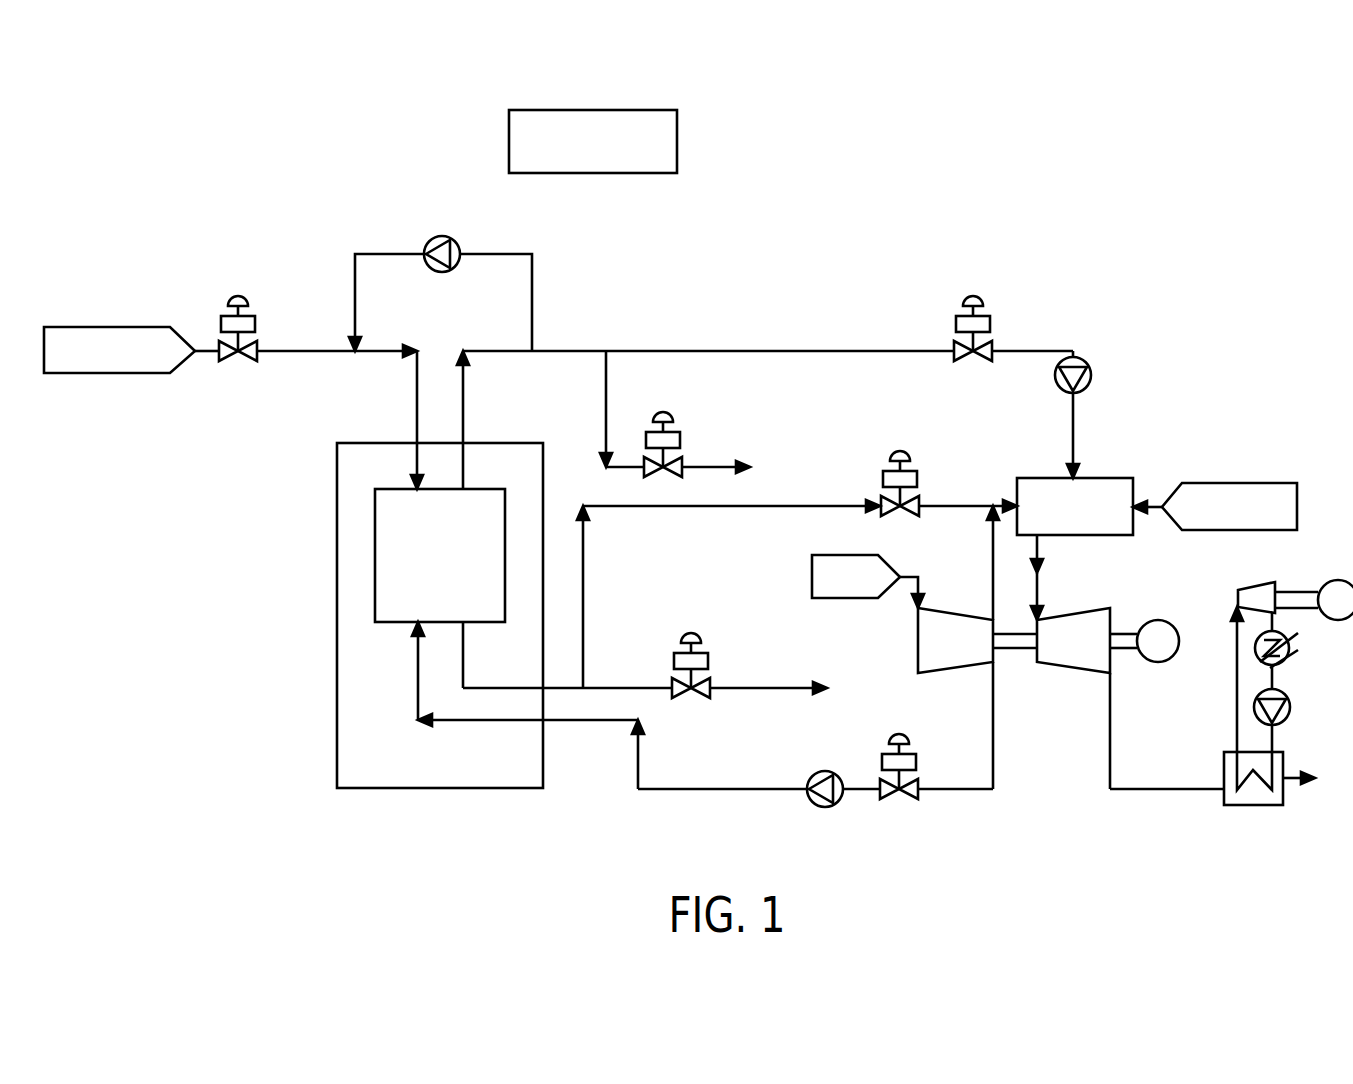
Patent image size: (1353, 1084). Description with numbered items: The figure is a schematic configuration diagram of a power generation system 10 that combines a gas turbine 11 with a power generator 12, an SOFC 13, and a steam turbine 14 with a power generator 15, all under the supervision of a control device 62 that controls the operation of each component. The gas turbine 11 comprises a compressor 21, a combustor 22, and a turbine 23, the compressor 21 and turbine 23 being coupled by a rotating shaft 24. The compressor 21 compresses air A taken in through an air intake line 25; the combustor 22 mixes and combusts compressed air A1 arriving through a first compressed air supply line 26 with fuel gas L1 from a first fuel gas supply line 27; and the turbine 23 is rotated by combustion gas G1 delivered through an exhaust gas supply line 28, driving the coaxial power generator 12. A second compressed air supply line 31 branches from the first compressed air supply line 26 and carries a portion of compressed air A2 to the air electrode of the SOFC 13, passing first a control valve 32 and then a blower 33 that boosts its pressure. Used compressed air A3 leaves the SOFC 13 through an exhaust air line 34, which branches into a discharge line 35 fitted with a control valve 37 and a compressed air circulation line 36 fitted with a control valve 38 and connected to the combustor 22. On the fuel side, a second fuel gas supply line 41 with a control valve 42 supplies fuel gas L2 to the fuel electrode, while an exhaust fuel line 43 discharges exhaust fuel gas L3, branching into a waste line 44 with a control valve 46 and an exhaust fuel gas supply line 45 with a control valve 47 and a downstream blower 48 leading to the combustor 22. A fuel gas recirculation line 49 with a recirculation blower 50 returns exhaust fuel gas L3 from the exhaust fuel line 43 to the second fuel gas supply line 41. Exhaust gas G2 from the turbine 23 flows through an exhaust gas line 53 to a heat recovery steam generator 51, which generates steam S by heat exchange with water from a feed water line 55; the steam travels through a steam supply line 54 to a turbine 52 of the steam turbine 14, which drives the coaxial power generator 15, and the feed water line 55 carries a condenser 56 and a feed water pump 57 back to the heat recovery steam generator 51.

The power generation system 10 is at (933, 193).
The gas turbine 11 is at (1130, 608).
The power generator 12 is at (1180, 641).
The SOFC 13 is at (366, 541).
The steam turbine 14 is at (1281, 577).
The power generator 15 is at (1338, 576).
The compressor 21 is at (953, 673).
The combustor 22 is at (1015, 486).
The turbine 23 is at (1071, 673).
The rotating shaft 24 is at (1015, 650).
The air intake line 25 is at (906, 575).
The first compressed air supply line 26 is at (990, 530).
The first fuel gas supply line 27 is at (1152, 505).
The exhaust gas supply line 28 is at (1040, 585).
The second compressed air supply line 31 is at (745, 792).
The control valve 32 is at (899, 734).
The blower 33 is at (824, 771).
The exhaust air line 34 is at (452, 660).
The discharge line 35 is at (623, 687).
The compressed air circulation line 36 is at (776, 514).
The control valve 37 is at (691, 630).
The control valve 38 is at (899, 450).
The second fuel gas supply line 41 is at (306, 351).
The control valve 42 is at (238, 297).
The exhaust fuel line 43 is at (501, 358).
The waste line 44 is at (721, 467).
The exhaust fuel gas supply line 45 is at (768, 351).
The control valve 46 is at (664, 412).
The control valve 47 is at (979, 304).
The blower 48 is at (1053, 375).
The fuel gas recirculation line 49 is at (516, 254).
The recirculation blower 50 is at (443, 236).
The heat recovery steam generator 51 is at (1288, 800).
The turbine 52 is at (1234, 598).
The exhaust gas line 53 is at (1133, 792).
The steam supply line 54 is at (1234, 721).
The feed water line 55 is at (1278, 735).
The condenser 56 is at (1293, 651).
The feed water pump 57 is at (1293, 707).
The control device 62 is at (595, 110).
The fuel gas L1 is at (1203, 482).
The fuel gas L2 is at (108, 328).
The exhaust fuel gas L3 is at (482, 338).
The air A is at (843, 600).
The compressed air A1 is at (982, 564).
The compressed air A2 is at (497, 733).
The compressed air A3 is at (785, 495).
The combustion gas G1 is at (1037, 548).
The exhaust gas G2 is at (1137, 778).
The steam S is at (1225, 682).